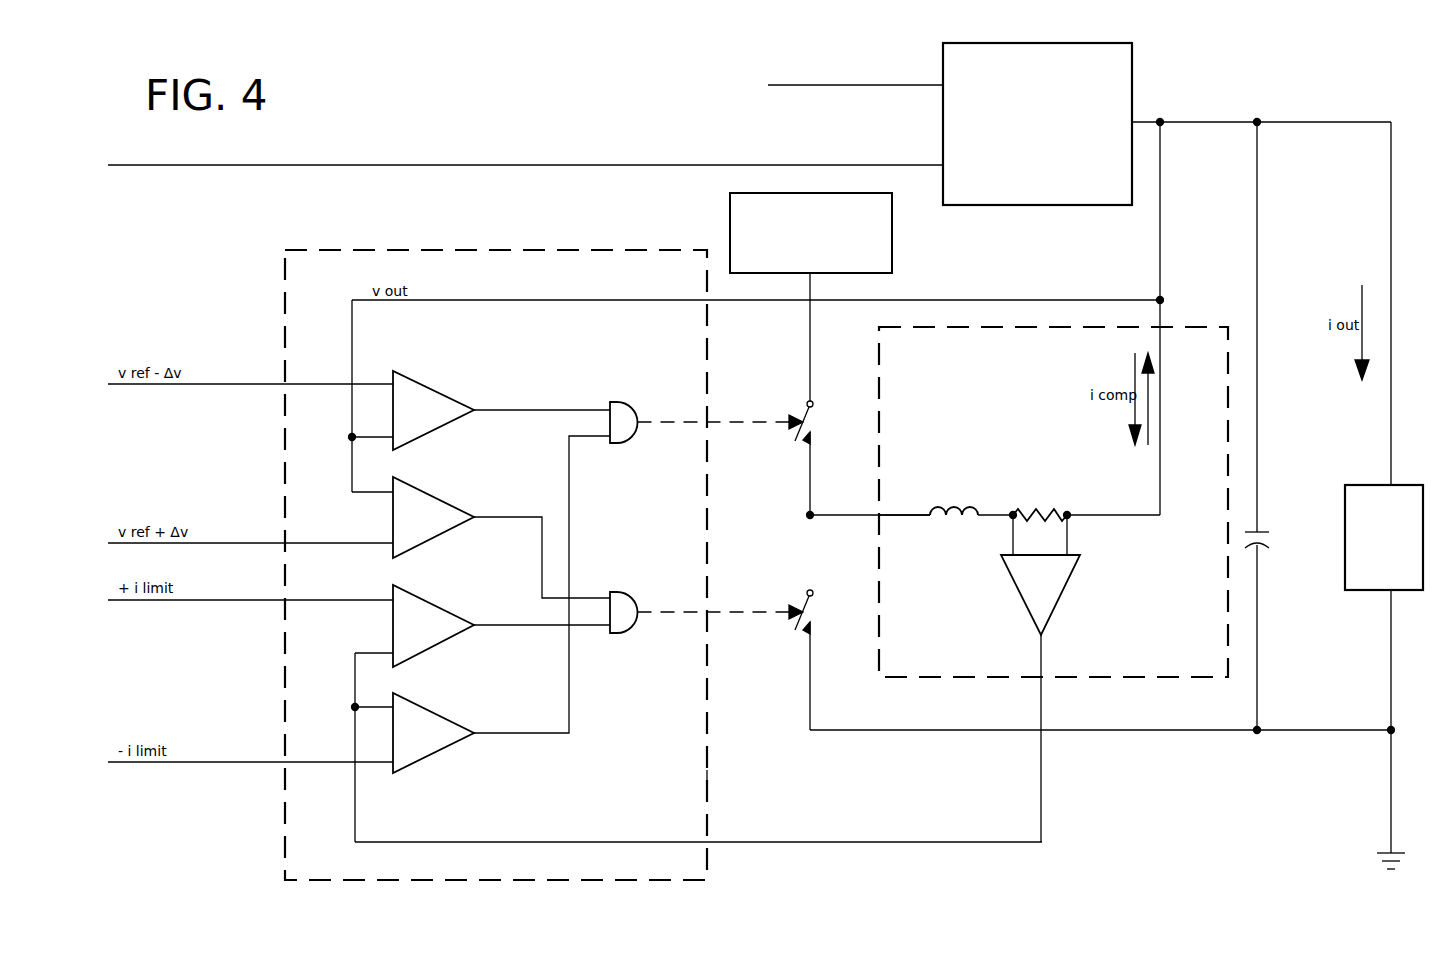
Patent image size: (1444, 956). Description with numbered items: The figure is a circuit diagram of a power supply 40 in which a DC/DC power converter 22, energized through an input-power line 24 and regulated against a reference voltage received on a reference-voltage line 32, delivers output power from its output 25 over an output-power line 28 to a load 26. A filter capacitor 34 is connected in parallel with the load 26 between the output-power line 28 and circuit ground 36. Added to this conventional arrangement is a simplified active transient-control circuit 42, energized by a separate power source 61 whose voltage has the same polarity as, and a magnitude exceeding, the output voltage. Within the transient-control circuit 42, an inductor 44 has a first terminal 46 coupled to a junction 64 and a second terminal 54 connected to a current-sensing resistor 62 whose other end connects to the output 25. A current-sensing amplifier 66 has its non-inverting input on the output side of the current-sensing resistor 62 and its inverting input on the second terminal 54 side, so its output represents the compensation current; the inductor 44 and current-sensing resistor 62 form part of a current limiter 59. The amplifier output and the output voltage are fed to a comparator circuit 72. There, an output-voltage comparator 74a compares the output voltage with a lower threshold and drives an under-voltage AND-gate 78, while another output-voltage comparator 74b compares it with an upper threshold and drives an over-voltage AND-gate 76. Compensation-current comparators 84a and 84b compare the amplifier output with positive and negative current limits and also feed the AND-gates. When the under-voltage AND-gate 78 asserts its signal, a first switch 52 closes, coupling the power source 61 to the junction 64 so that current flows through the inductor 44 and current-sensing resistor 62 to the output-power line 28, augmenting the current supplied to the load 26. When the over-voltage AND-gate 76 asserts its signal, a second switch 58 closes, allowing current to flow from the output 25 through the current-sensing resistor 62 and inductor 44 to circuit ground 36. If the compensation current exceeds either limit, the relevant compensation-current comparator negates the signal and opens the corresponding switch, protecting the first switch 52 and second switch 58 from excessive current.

The power supply 40 is at (388, 150).
The reference-voltage line 32 is at (318, 166).
The input-power line 24 is at (865, 86).
The DC/DC power converter 22 is at (974, 76).
The output 25 is at (1135, 122).
The output-power line 28 is at (1348, 125).
The power source 61 is at (761, 224).
The active transient-control circuit 42 is at (204, 834).
The output-voltage comparator 74a is at (430, 405).
The output-voltage comparator 74b is at (430, 512).
The compensation-current comparator 84a is at (422, 619).
The compensation-current comparator 84b is at (430, 730).
The under-voltage AND-gate 78 is at (625, 420).
The over-voltage AND-gate 76 is at (625, 610).
The first switch 52 is at (805, 427).
The second switch 58 is at (805, 616).
The junction 64 is at (812, 513).
The current limiter 59 is at (986, 678).
The first terminal 46 is at (928, 514).
The inductor 44 is at (952, 512).
The second terminal 54 is at (980, 513).
The current-sensing resistor 62 is at (1040, 512).
The current-sensing amplifier 66 is at (1045, 585).
The filter capacitor 34 is at (1262, 540).
The load 26 is at (1378, 523).
The circuit ground 36 is at (1386, 868).
The comparator circuit 72 is at (707, 788).